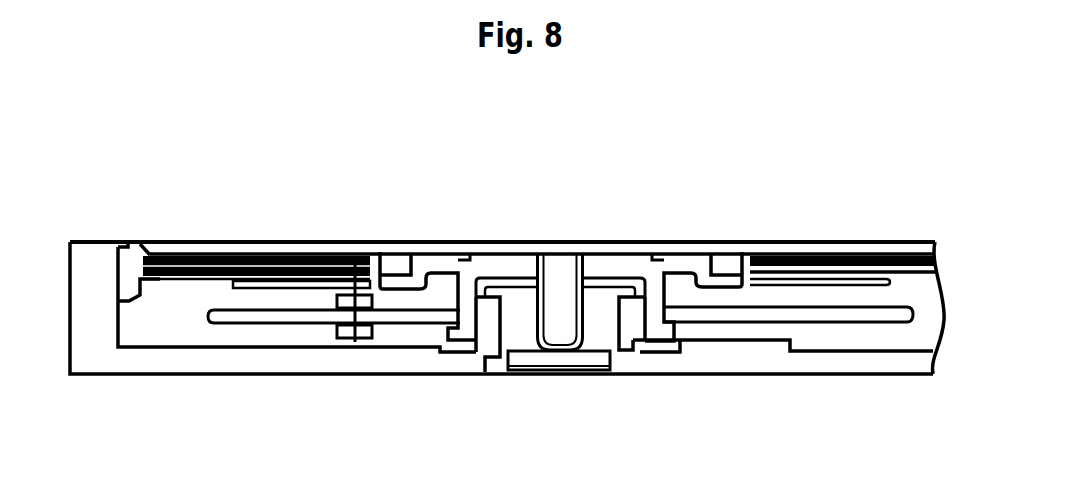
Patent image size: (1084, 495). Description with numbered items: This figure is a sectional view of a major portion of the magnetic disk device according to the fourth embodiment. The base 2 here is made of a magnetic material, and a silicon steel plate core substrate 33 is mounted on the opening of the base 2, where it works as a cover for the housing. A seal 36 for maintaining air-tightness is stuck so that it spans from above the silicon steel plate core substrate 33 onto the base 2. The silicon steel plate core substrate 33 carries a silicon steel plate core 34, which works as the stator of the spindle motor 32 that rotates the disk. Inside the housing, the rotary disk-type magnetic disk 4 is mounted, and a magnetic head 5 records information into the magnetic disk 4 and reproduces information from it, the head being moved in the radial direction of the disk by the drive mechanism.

The base 2 is at (175, 363).
The magnetic disk 4 is at (278, 318).
The magnetic head 5 is at (355, 262).
The spindle motor 32 is at (436, 265).
The silicon steel plate core substrate 33 is at (245, 252).
The silicon steel plate core 34 is at (182, 252).
The seal 36 is at (572, 240).